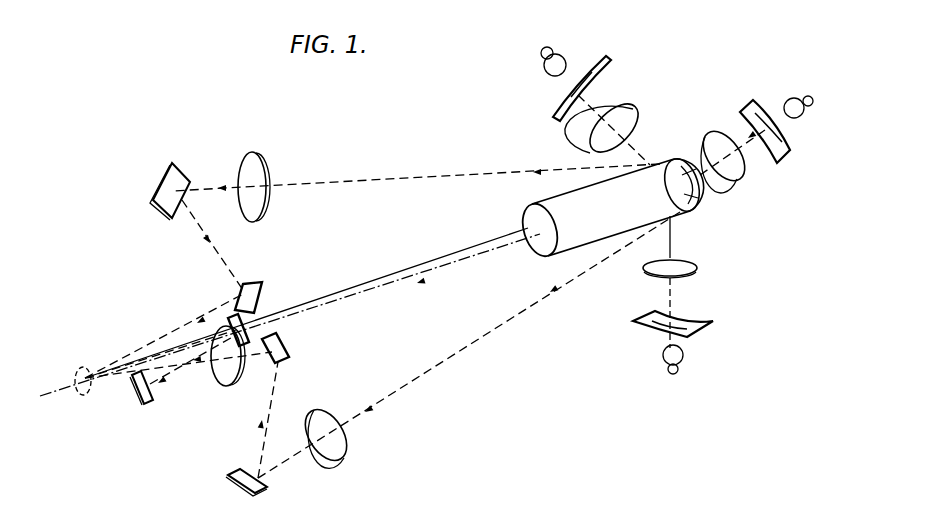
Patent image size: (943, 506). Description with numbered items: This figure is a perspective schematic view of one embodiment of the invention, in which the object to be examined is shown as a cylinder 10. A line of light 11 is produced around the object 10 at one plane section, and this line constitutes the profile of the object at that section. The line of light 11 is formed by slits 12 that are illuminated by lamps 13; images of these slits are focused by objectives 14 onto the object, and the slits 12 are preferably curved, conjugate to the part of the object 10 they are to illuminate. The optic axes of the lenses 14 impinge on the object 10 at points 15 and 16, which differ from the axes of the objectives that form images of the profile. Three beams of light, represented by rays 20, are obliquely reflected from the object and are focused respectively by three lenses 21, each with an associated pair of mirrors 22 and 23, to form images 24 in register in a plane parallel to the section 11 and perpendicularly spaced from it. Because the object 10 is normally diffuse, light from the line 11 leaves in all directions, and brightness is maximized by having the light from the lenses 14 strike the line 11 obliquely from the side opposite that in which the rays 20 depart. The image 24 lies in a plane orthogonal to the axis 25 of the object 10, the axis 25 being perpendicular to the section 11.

The cylinder 10 is at (530, 210).
The line of light 11 is at (703, 198).
The slits 12 is at (606, 66).
The lamps 13 is at (553, 73).
The objectives 14 is at (710, 134).
The point 15 is at (673, 218).
The point 16 is at (692, 164).
The rays 20 is at (436, 180).
The lenses 21 is at (255, 167).
The mirrors 22 is at (155, 199).
The mirrors 23 is at (246, 316).
The images 24 is at (77, 370).
The axis 25 is at (425, 272).